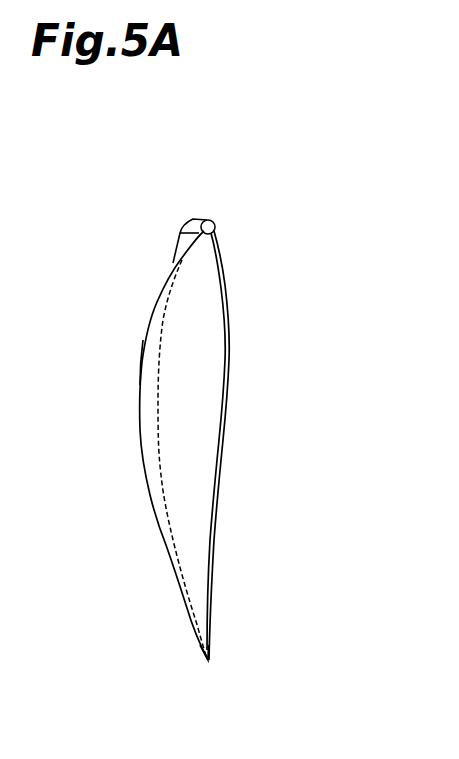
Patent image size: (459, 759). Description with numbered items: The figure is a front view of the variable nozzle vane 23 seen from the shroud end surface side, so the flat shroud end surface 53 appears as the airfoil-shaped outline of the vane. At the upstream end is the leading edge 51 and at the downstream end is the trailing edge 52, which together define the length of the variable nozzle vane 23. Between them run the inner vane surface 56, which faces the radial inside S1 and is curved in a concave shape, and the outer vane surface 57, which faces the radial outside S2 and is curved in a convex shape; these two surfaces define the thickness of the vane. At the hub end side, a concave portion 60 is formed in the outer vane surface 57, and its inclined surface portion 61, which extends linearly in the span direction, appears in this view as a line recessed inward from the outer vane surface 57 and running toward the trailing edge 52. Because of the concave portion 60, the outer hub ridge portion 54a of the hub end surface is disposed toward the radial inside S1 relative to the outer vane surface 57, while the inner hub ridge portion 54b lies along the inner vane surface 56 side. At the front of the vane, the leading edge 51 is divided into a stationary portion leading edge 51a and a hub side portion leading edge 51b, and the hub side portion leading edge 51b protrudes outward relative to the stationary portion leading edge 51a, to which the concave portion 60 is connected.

The variable nozzle vane 23 is at (275, 190).
The leading edge 51 is at (243, 158).
The stationary portion leading edge 51a is at (200, 218).
The hub side portion leading edge 51b is at (200, 218).
The trailing edge 52 is at (208, 662).
The shroud end surface 53 is at (200, 350).
The outer hub ridge portion 54a is at (155, 501).
The inner hub ridge portion 54b is at (222, 492).
The inner vane surface 56 is at (218, 448).
The outer vane surface 57 is at (140, 436).
The concave portion 60 is at (133, 358).
The inclined surface portion 61 is at (152, 316).
The radial inside S1 is at (286, 412).
The radial outside S2 is at (113, 412).